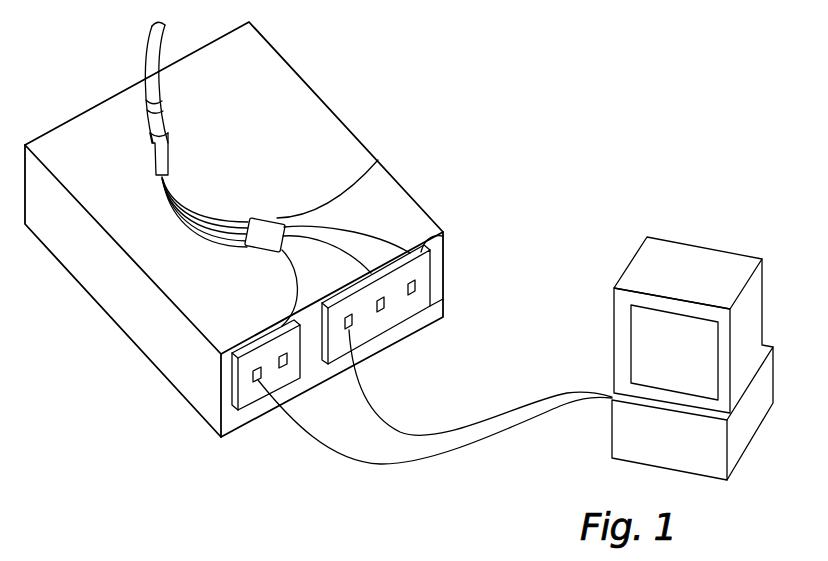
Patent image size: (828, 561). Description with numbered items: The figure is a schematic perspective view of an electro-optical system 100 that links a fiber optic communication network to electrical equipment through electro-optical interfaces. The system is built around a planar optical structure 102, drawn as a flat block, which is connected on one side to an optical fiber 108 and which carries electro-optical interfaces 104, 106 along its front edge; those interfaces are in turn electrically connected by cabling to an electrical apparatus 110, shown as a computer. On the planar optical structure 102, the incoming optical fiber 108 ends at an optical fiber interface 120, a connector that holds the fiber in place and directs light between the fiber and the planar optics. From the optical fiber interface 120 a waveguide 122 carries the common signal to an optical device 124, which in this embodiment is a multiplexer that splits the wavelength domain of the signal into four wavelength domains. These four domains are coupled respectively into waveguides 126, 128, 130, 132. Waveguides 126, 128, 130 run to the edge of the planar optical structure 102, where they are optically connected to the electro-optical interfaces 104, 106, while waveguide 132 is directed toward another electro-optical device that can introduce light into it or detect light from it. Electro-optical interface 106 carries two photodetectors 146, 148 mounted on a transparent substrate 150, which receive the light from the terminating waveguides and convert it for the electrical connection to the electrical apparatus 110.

The electro-optical system 100 is at (452, 163).
The planar optical structure 102 is at (155, 335).
The electro-optical interface 104 is at (288, 367).
The electro-optical interface 106 is at (397, 312).
The optical fiber 108 is at (152, 70).
The electrical apparatus 110 is at (628, 430).
The optical fiber interface 120 is at (147, 110).
The waveguide 122 is at (167, 150).
The optical device 124 is at (221, 216).
The waveguide 126 is at (295, 295).
The waveguide 128 is at (357, 258).
The waveguide 130 is at (356, 228).
The waveguide 132 is at (352, 194).
The photodetector 146 is at (380, 313).
The photodetector 148 is at (416, 286).
The transparent substrate 150 is at (442, 231).